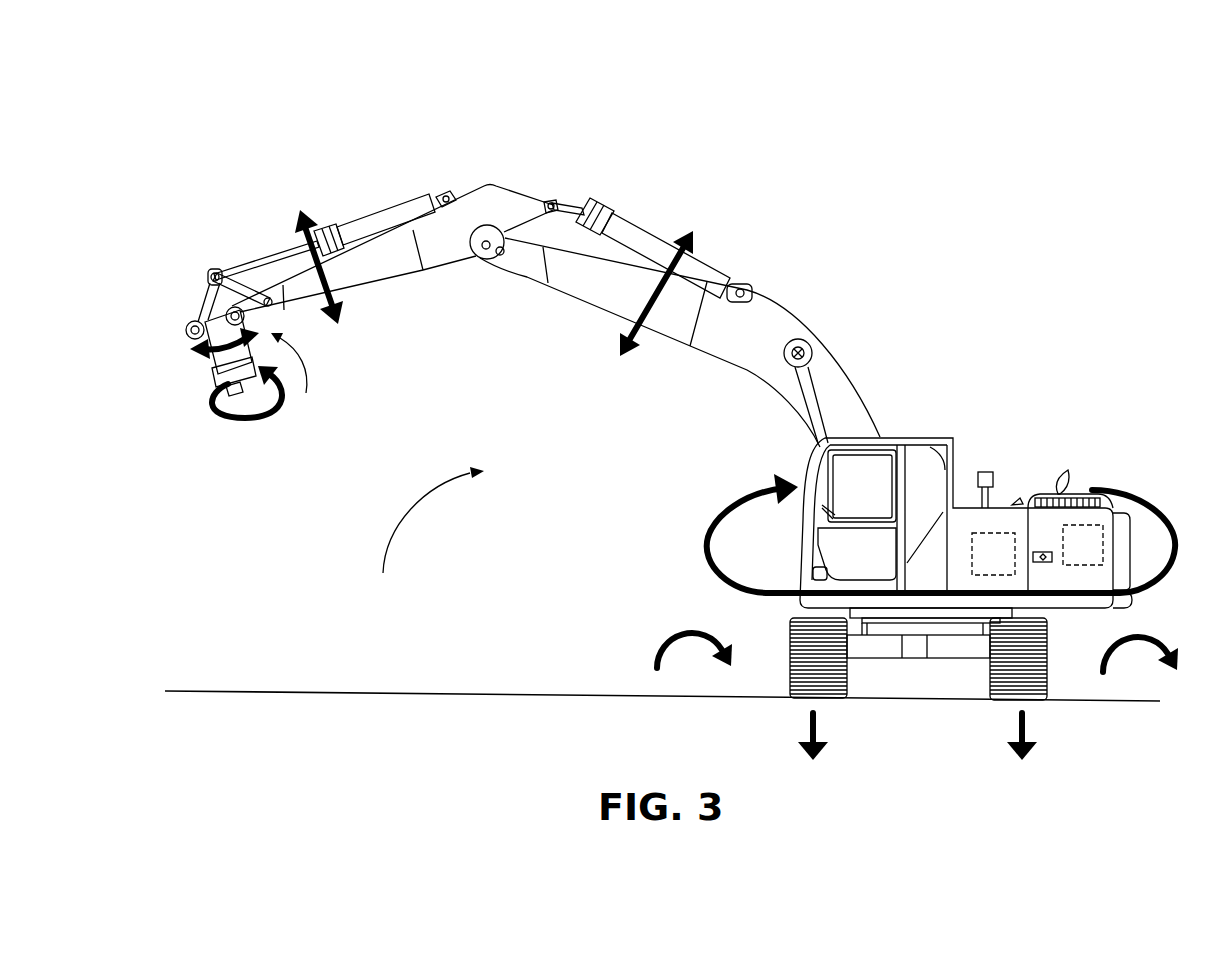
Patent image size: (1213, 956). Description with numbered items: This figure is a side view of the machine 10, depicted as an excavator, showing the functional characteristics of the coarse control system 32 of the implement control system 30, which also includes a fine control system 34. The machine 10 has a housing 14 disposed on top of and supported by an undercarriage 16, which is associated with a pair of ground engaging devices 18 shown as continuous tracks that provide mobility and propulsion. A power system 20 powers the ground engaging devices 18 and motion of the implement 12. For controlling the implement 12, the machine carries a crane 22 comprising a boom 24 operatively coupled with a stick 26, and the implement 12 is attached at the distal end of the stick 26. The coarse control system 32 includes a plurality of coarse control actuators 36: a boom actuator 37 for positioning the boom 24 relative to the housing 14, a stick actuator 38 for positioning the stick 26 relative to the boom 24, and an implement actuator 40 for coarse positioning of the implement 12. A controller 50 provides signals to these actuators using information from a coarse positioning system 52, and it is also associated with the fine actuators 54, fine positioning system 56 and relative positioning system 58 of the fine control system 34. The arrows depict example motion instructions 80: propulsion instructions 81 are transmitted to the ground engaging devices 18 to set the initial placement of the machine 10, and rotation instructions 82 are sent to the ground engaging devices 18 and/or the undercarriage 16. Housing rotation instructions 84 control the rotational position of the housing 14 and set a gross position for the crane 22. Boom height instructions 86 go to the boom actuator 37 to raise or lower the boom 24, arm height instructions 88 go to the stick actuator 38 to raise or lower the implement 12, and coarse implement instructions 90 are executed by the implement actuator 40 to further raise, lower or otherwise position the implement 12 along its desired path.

The machine 10 is at (1000, 110).
The implement 12 is at (190, 327).
The housing 14 is at (959, 438).
The undercarriage 16 is at (907, 660).
The ground engaging devices 18 is at (790, 622).
The power system 20 is at (1095, 554).
The crane 22 is at (498, 276).
The boom 24 is at (664, 337).
The stick 26 is at (374, 291).
The implement control system 30 is at (758, 251).
The coarse control system 32 is at (777, 260).
The fine control system 34 is at (294, 372).
The coarse control actuators 36 is at (790, 278).
The boom actuator 37 is at (803, 403).
The stick actuator 38 is at (640, 233).
The implement actuator 40 is at (378, 217).
The controller 50 is at (1006, 562).
The coarse positioning system 52 is at (990, 472).
The fine actuators 54 is at (194, 370).
The fine positioning system 56 is at (205, 290).
The relative positioning system 58 is at (212, 413).
The motion instructions 80 is at (428, 532).
The propulsion instructions 81 is at (807, 723).
The rotation instructions 82 is at (656, 634).
The housing rotation instructions 84 is at (703, 535).
The boom height instructions 86 is at (614, 337).
The arm height instructions 88 is at (320, 264).
The coarse implement instructions 90 is at (196, 343).